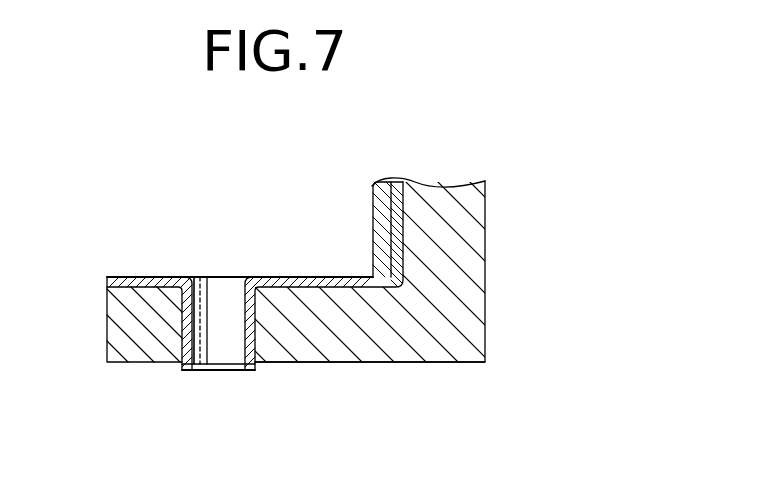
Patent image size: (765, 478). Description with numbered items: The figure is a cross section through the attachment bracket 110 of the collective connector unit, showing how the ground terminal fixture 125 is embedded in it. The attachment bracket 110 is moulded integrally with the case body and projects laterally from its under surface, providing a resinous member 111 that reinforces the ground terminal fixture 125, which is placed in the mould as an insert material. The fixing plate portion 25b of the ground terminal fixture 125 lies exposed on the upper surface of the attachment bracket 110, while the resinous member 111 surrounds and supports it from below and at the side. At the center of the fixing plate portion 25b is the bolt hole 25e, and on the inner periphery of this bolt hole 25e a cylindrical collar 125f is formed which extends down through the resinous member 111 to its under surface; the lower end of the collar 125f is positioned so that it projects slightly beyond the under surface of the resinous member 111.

The fixing plate portion 25b is at (157, 276).
The bolt hole 25e is at (216, 276).
The ground terminal fixture 125 is at (300, 270).
The cylindrical collar 125f is at (247, 345).
The resinous member 111 is at (324, 352).
The attachment bracket 110 is at (407, 372).